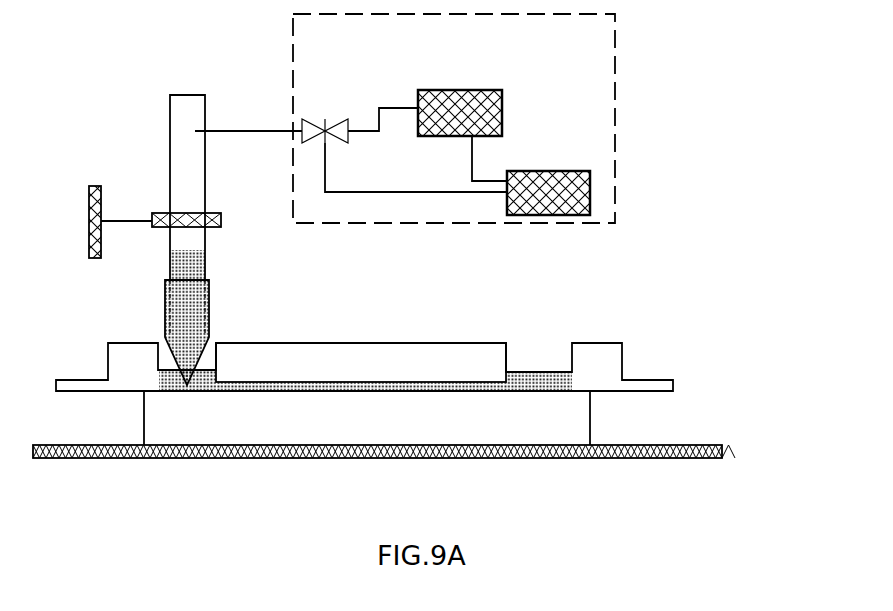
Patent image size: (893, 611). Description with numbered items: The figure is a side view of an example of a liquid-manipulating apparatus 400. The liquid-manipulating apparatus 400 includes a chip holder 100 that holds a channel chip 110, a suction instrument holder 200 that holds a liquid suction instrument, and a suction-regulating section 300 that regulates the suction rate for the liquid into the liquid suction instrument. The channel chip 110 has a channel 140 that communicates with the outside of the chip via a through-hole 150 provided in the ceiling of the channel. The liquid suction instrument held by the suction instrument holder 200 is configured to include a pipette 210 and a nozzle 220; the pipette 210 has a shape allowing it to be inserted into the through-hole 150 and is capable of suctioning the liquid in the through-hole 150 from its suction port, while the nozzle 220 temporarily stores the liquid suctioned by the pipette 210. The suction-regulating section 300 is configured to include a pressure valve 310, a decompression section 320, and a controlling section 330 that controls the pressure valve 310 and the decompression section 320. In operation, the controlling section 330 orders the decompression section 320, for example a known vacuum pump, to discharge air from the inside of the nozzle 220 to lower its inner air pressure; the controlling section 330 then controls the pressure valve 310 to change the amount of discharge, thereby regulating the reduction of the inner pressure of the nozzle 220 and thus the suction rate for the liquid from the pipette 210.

The chip holder 100 is at (517, 460).
The channel chip 110 is at (657, 343).
The channel 140 is at (380, 382).
The through-hole 150 is at (210, 345).
The suction instrument holder 200 is at (97, 182).
The pipette 210 is at (208, 288).
The nozzle 220 is at (190, 240).
The suction-regulating section 300 is at (622, 157).
The pressure valve 310 is at (322, 115).
The decompression section 320 is at (462, 107).
The controlling section 330 is at (558, 182).
The liquid-manipulating apparatus 400 is at (767, 50).